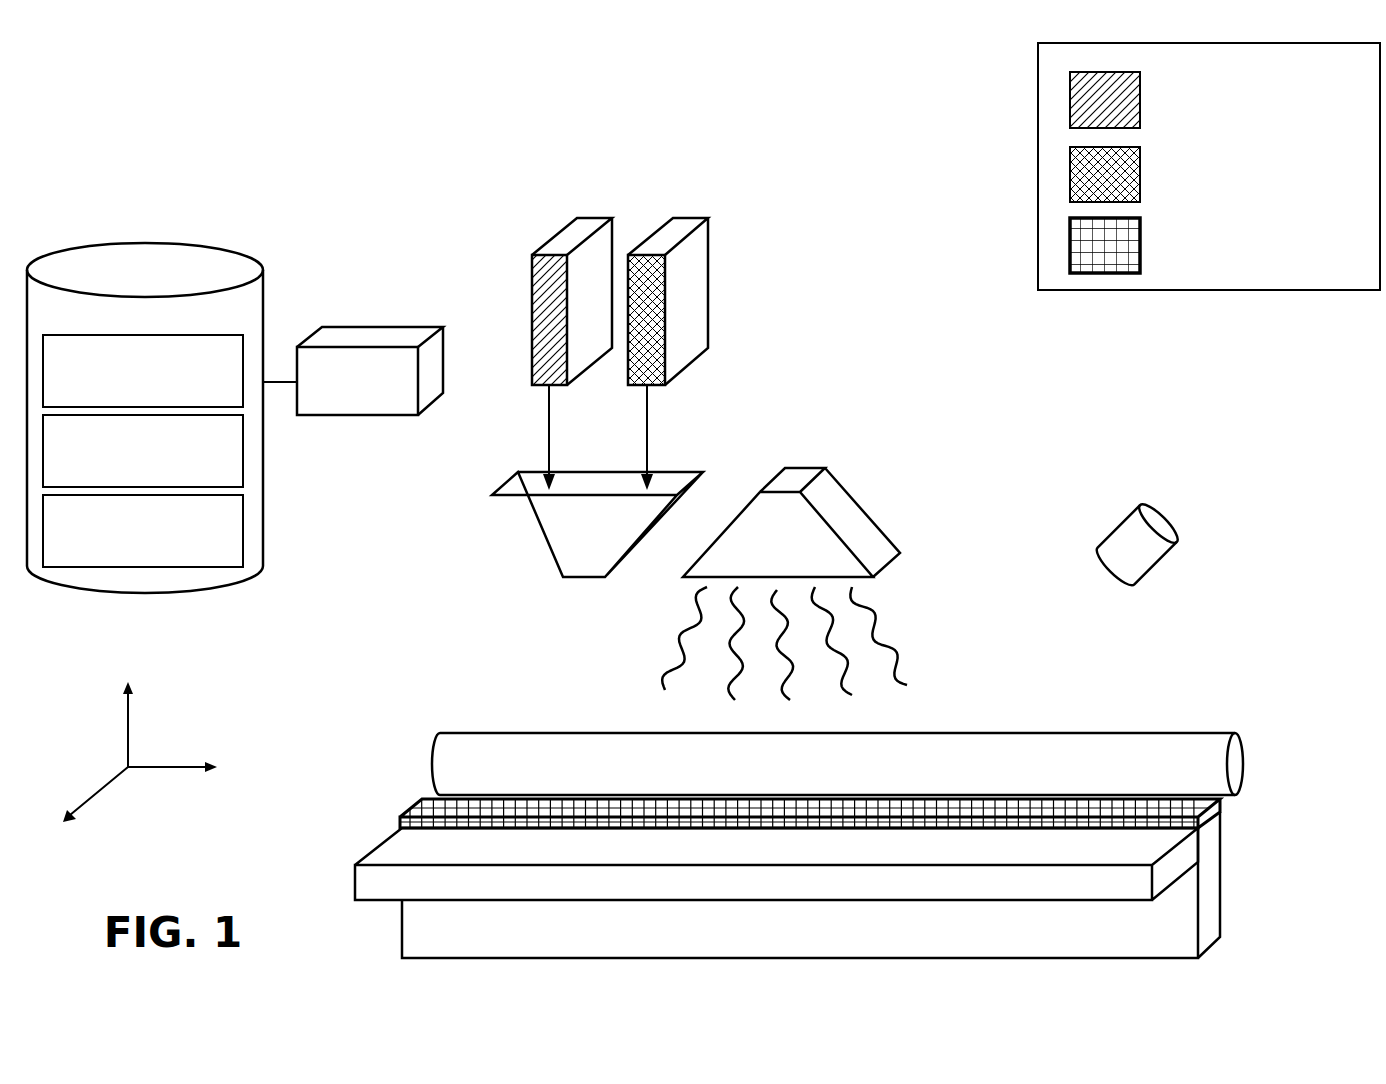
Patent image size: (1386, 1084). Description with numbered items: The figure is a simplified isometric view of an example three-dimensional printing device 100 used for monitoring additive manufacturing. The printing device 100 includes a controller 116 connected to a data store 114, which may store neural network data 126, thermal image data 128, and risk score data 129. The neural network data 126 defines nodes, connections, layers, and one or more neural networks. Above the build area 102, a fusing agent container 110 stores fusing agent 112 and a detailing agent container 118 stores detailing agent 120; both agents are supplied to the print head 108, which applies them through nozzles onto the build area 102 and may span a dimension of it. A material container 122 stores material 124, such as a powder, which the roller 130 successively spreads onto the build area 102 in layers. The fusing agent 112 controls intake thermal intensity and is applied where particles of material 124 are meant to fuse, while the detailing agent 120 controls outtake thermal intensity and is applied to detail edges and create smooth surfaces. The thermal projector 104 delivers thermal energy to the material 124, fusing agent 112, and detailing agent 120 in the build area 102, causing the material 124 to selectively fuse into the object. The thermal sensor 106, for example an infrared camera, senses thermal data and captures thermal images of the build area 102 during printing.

The 3D printing device 100 is at (170, 156).
The build area 102 is at (776, 864).
The thermal projector 104 is at (857, 523).
The thermal sensor 106 is at (1162, 528).
The print head 108 is at (532, 542).
The fusing agent container 110 is at (530, 288).
The fusing agent 112 is at (1198, 100).
The data store 114 is at (145, 418).
The controller 116 is at (353, 371).
The detailing agent container 118 is at (695, 290).
The detailing agent 120 is at (1205, 174).
The material container 122 is at (1222, 878).
The material 124 is at (1197, 245).
The neural network data 126 is at (143, 371).
The thermal image data 128 is at (143, 451).
The risk score data 129 is at (143, 531).
The roller 130 is at (1170, 733).